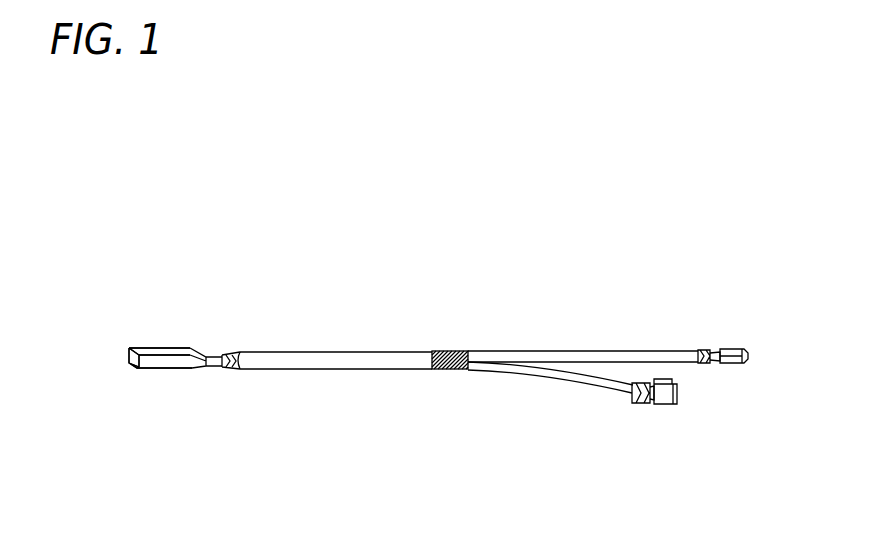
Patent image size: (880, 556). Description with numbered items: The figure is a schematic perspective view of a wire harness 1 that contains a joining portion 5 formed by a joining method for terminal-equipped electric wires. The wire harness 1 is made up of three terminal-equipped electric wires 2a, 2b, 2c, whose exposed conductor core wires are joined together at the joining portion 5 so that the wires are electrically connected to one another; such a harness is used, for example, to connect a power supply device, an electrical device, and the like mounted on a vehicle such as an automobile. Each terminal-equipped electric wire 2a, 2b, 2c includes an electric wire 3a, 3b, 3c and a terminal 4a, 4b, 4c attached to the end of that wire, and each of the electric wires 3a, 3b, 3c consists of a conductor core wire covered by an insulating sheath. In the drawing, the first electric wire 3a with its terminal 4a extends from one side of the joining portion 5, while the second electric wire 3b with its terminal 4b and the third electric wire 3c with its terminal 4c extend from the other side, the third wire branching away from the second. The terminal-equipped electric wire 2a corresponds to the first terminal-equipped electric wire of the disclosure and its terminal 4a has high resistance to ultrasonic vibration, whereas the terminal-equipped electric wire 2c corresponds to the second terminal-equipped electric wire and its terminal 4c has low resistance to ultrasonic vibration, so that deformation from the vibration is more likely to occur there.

The wire harness 1 is at (535, 153).
The terminal-equipped electric wire 2a is at (340, 243).
The terminal-equipped electric wire 2b is at (770, 243).
The terminal-equipped electric wire 2c is at (645, 508).
The electric wire 3a is at (297, 351).
The electric wire 3b is at (600, 350).
The electric wire 3c is at (540, 382).
The terminal 4a is at (170, 346).
The terminal 4b is at (725, 348).
The terminal 4c is at (660, 406).
The joining portion 5 is at (450, 347).